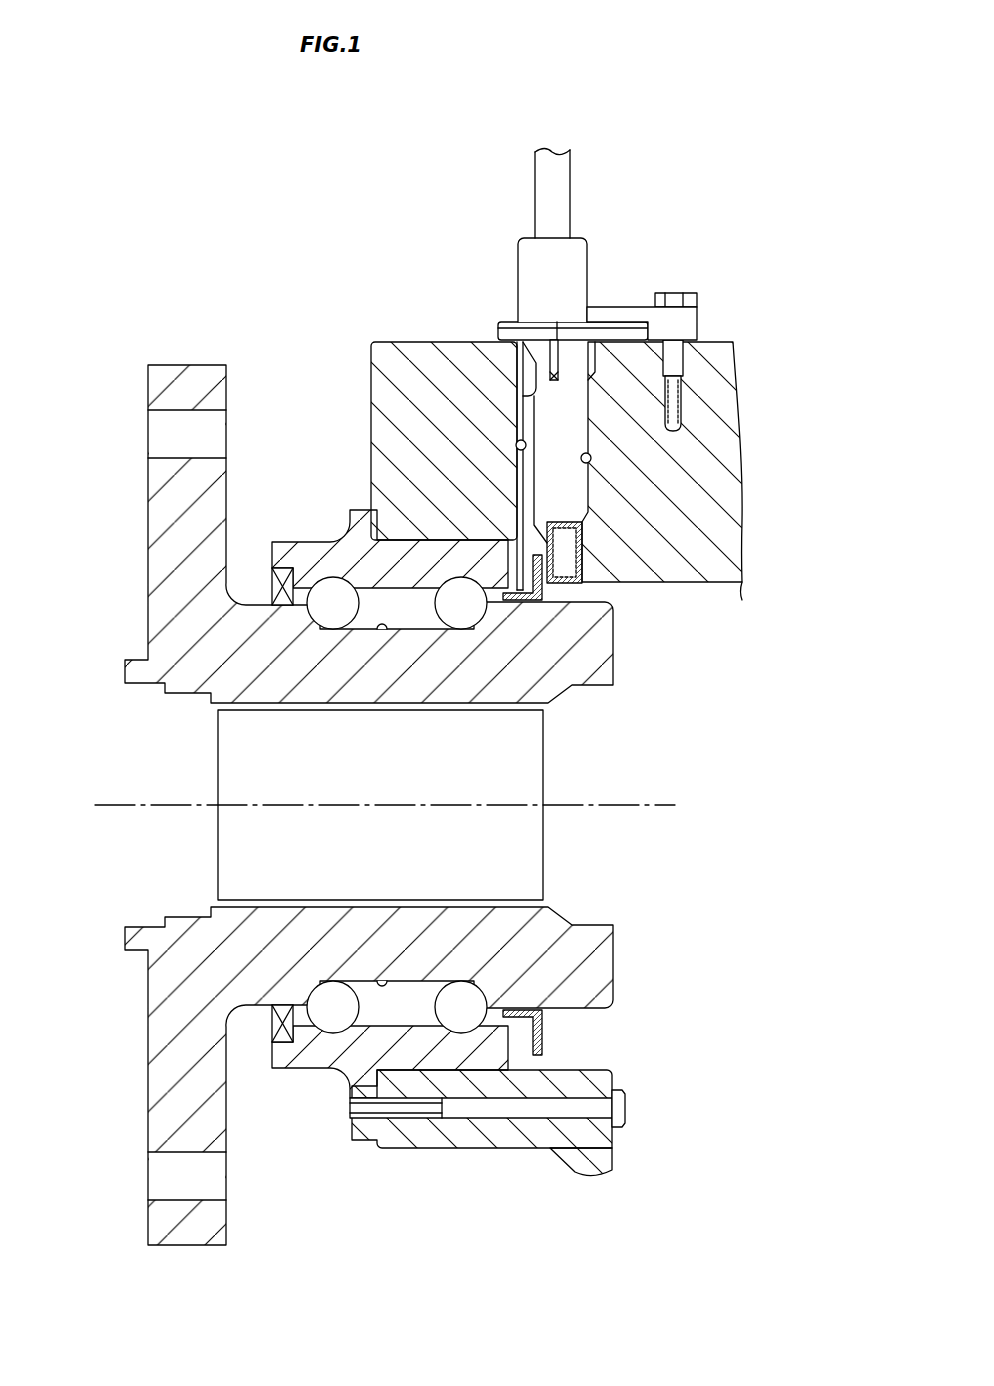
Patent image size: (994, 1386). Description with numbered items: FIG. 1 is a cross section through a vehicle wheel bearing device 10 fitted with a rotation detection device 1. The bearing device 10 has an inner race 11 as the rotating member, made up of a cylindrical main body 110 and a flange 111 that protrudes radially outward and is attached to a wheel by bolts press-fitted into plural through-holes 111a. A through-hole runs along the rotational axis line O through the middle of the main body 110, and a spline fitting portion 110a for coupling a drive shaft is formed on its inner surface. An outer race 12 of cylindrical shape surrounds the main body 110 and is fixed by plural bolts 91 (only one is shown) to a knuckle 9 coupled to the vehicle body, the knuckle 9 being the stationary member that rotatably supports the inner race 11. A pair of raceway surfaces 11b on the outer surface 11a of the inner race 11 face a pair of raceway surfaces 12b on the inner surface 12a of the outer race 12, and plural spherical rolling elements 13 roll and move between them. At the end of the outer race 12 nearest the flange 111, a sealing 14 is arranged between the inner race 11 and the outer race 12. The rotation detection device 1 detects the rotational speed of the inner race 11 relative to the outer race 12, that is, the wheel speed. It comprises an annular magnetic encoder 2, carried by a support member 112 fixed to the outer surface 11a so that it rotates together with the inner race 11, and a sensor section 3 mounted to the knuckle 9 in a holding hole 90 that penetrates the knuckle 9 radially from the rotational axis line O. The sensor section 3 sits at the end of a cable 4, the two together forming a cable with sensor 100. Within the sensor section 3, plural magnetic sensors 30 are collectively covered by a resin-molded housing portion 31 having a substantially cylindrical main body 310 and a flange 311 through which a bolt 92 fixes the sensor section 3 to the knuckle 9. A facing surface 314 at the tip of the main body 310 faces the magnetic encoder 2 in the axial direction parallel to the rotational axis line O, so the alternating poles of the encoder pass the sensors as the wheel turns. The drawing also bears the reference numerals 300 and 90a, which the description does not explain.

The cable with sensor 100 is at (607, 158).
The rotation detection device 1 is at (497, 225).
The magnetic encoder 2 is at (558, 600).
The sensor section 3 is at (583, 232).
The magnetic sensor 30 is at (580, 585).
The detecting element 300 is at (560, 562).
The housing portion 31 is at (585, 407).
The main body 310 is at (585, 437).
The flange 311 is at (613, 306).
The facing surface 314 is at (533, 527).
The cable 4 is at (535, 180).
The knuckle 9 is at (392, 340).
The holding hole 90 is at (519, 443).
The hole of cover 90a is at (589, 462).
The bolt 91 is at (622, 1125).
The bolt 92 is at (684, 293).
The wheel bearing device 10 is at (172, 325).
The inner race 11 is at (90, 562).
The main body 110 is at (235, 658).
The spline fitting portion 110a is at (338, 906).
The flange 111 is at (163, 563).
The through-hole 111a is at (163, 455).
The support member 112 is at (582, 620).
The outer surface 11a is at (386, 634).
The raceway surface 11b is at (333, 630).
The outer race 12 is at (355, 510).
The inner surface 12a is at (292, 569).
The raceway surface 12b is at (333, 587).
The spherical rolling element 13 is at (320, 618).
The sealing 14 is at (273, 585).
The rotational axis line O is at (648, 803).